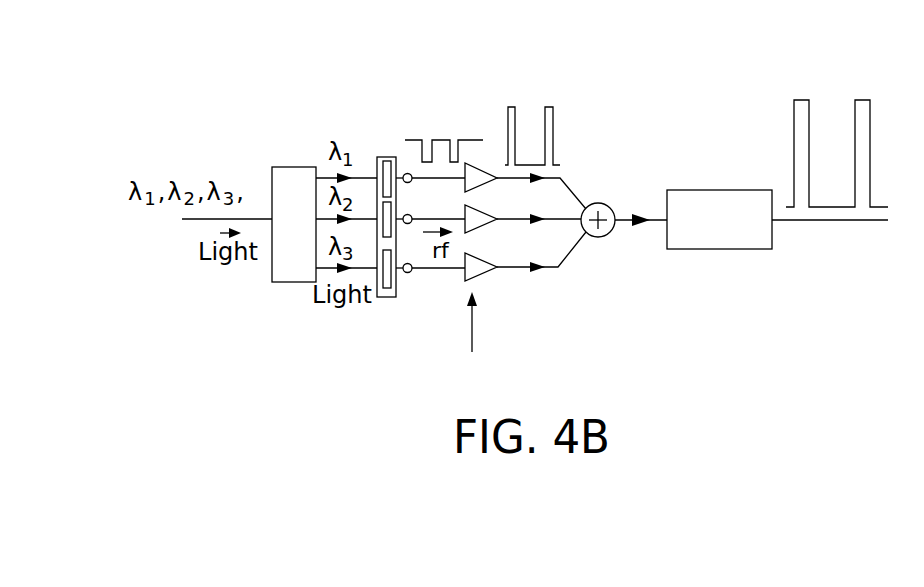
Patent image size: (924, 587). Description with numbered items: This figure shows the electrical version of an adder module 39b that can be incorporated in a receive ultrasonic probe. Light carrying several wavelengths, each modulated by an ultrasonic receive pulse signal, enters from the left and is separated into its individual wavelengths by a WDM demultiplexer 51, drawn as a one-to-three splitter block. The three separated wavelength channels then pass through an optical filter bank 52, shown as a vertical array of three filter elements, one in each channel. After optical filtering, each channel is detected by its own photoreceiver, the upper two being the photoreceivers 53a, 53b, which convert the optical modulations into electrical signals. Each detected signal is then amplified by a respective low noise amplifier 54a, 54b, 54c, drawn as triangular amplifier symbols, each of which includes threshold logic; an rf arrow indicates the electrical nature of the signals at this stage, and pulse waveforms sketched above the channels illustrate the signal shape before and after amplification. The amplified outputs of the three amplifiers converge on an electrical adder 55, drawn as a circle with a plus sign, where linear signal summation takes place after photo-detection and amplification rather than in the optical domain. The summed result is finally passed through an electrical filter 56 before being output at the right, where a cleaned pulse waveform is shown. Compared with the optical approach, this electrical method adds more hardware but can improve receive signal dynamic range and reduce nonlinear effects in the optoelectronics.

The receiver / demultiplexing system 39b is at (768, 337).
The WDM demultiplexer 51 is at (293, 167).
The optical filter bank 52 is at (387, 157).
The photoreceiver 53a is at (402, 159).
The photoreceiver 53b is at (406, 213).
The low noise amplifier 54a is at (487, 162).
The low noise amplifier 54b is at (484, 209).
The low noise amplifier 54c is at (484, 258).
The electrical adder 55 is at (611, 193).
The electrical filter 56 is at (693, 190).